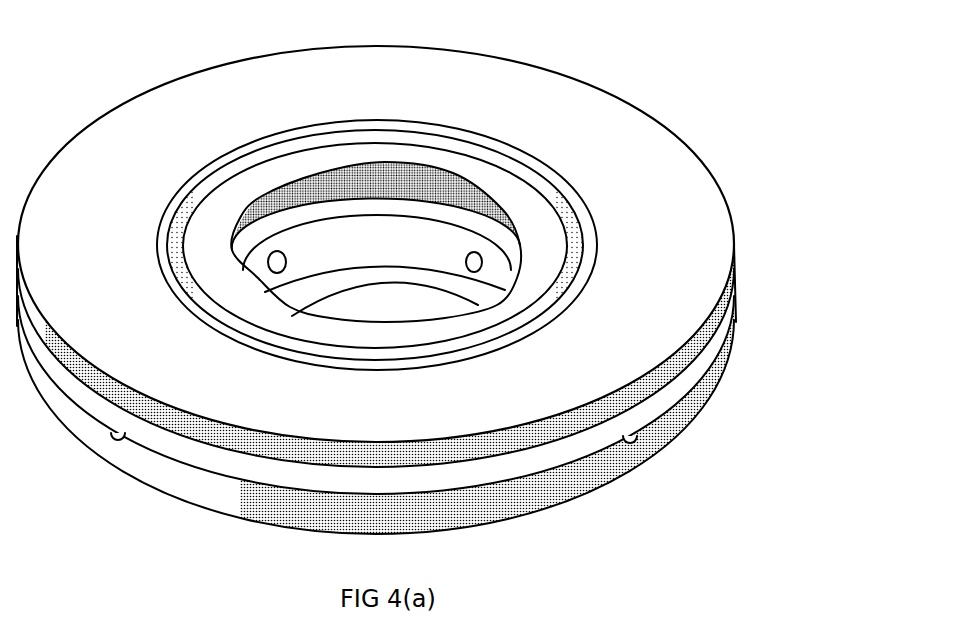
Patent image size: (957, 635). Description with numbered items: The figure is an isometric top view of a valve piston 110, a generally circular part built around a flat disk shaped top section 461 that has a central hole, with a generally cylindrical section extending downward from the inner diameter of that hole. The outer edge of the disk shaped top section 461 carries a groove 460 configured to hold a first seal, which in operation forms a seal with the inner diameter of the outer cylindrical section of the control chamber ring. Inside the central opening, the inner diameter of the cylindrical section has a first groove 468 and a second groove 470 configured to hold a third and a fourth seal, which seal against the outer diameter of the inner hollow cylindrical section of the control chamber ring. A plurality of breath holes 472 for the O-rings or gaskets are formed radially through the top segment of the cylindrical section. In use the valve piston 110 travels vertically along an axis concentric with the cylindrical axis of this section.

The valve piston 110 is at (630, 98).
The groove 460 is at (670, 412).
The disk shaped top section 461 is at (716, 382).
The first groove 468 is at (430, 226).
The second groove 470 is at (340, 193).
The breath holes 472 is at (267, 263).